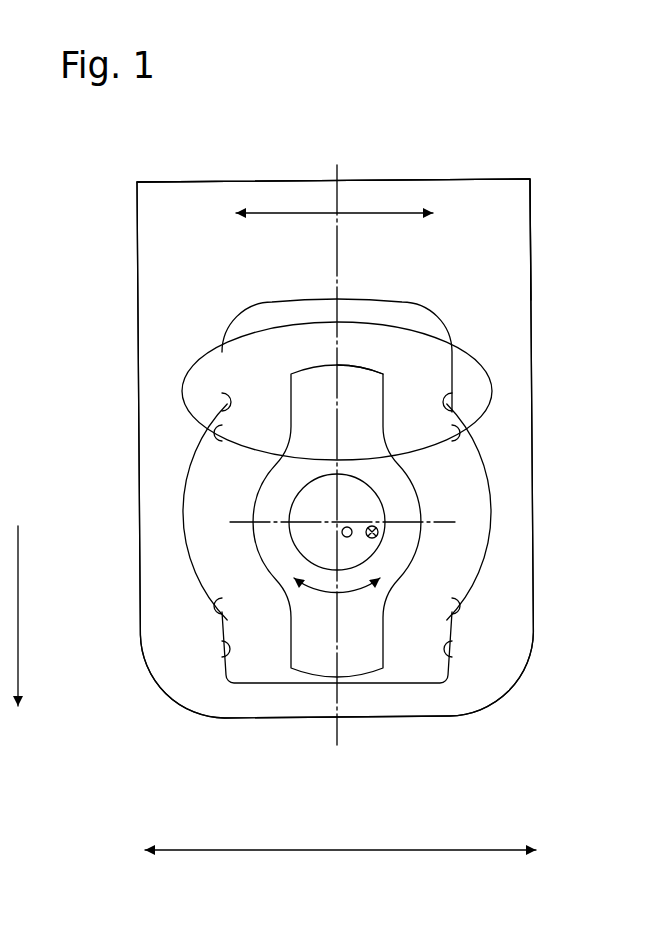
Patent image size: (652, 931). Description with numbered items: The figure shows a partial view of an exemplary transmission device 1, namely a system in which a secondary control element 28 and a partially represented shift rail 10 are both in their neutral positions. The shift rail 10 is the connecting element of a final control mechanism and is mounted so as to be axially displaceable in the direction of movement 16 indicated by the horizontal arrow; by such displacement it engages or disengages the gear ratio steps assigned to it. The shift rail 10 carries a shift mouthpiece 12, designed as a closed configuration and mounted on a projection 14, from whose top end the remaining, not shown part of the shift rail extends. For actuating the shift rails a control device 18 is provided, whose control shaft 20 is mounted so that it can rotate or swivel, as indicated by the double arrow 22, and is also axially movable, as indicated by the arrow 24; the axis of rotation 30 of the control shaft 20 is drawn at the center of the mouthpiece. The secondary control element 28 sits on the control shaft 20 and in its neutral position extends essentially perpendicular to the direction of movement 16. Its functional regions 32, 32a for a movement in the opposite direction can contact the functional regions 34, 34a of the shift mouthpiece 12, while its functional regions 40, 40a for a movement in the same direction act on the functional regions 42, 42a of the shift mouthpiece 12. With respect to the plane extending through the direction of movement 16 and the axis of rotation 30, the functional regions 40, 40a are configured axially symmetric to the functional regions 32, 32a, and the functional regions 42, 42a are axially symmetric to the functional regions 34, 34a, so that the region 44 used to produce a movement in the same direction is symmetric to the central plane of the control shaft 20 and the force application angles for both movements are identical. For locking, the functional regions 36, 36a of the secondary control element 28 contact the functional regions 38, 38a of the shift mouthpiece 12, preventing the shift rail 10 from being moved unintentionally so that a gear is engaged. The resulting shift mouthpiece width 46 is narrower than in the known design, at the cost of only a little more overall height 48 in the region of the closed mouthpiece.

The transmission device 1 is at (108, 208).
The shift rail 10 is at (483, 179).
The shift mouthpiece 12 is at (192, 537).
The projection 14 is at (503, 197).
The direction of movement 16 is at (278, 212).
The control device 18 is at (443, 493).
The control shaft 20 is at (353, 537).
The double arrow 22 is at (347, 592).
The arrow 24 is at (380, 534).
The secondary control element 28 is at (347, 388).
The axis of rotation 30 is at (337, 522).
The functional region 32 is at (280, 667).
The functional region 32a is at (394, 667).
The functional region 34 is at (225, 662).
The functional region 34a is at (452, 650).
The functional region 36 is at (373, 366).
The functional region 36a is at (298, 366).
The functional region 38 is at (452, 440).
The functional region 38a is at (214, 438).
The functional region 40 is at (290, 392).
The functional region 40a is at (384, 392).
The functional region 42 is at (222, 392).
The functional region 42a is at (452, 392).
The region 44 is at (460, 348).
The shift mouthpiece width 46 is at (488, 848).
The overall height 48 is at (18, 562).